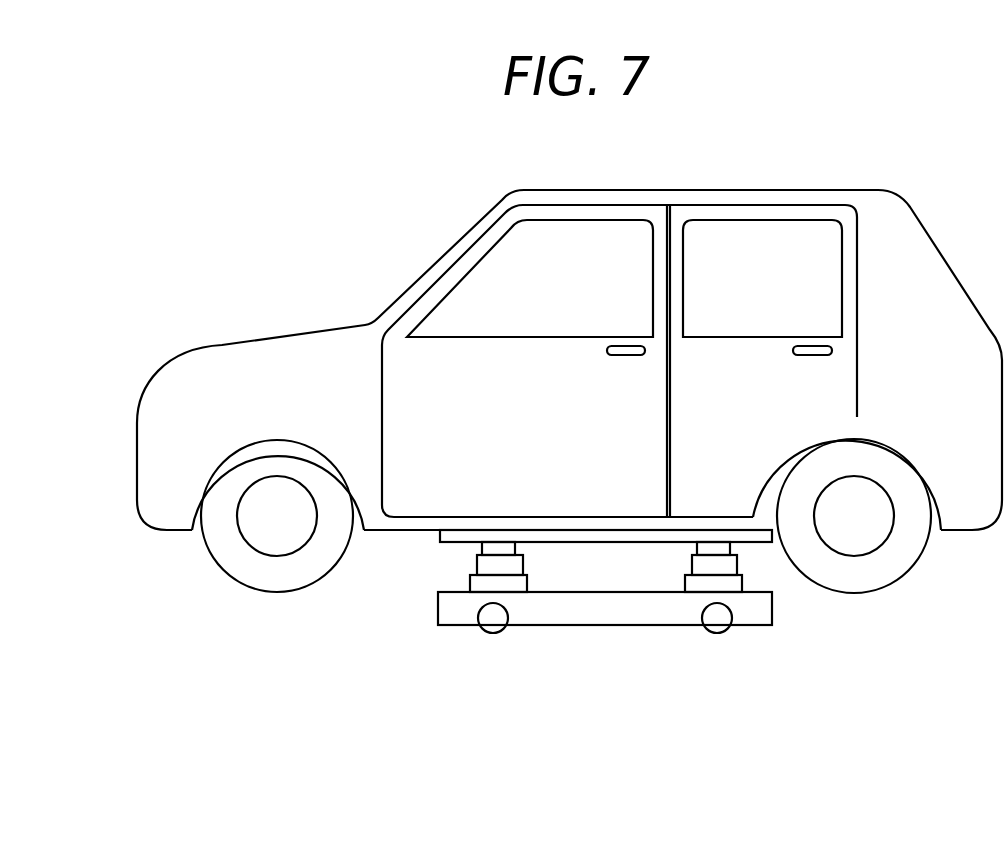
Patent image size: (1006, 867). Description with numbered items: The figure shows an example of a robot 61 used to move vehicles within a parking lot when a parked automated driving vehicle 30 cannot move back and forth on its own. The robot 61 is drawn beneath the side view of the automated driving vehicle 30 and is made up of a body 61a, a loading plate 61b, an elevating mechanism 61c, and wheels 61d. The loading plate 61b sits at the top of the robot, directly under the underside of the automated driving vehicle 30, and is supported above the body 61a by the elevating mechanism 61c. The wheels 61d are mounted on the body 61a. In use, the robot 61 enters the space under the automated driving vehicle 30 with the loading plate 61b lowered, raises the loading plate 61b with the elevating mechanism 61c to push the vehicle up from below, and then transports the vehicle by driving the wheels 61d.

The automated driving vehicle 30 is at (930, 238).
The robot 61 is at (572, 610).
The body 61a is at (637, 625).
The loading plate 61b is at (440, 537).
The elevating mechanism 61c is at (523, 562).
The wheels 61d is at (493, 633).